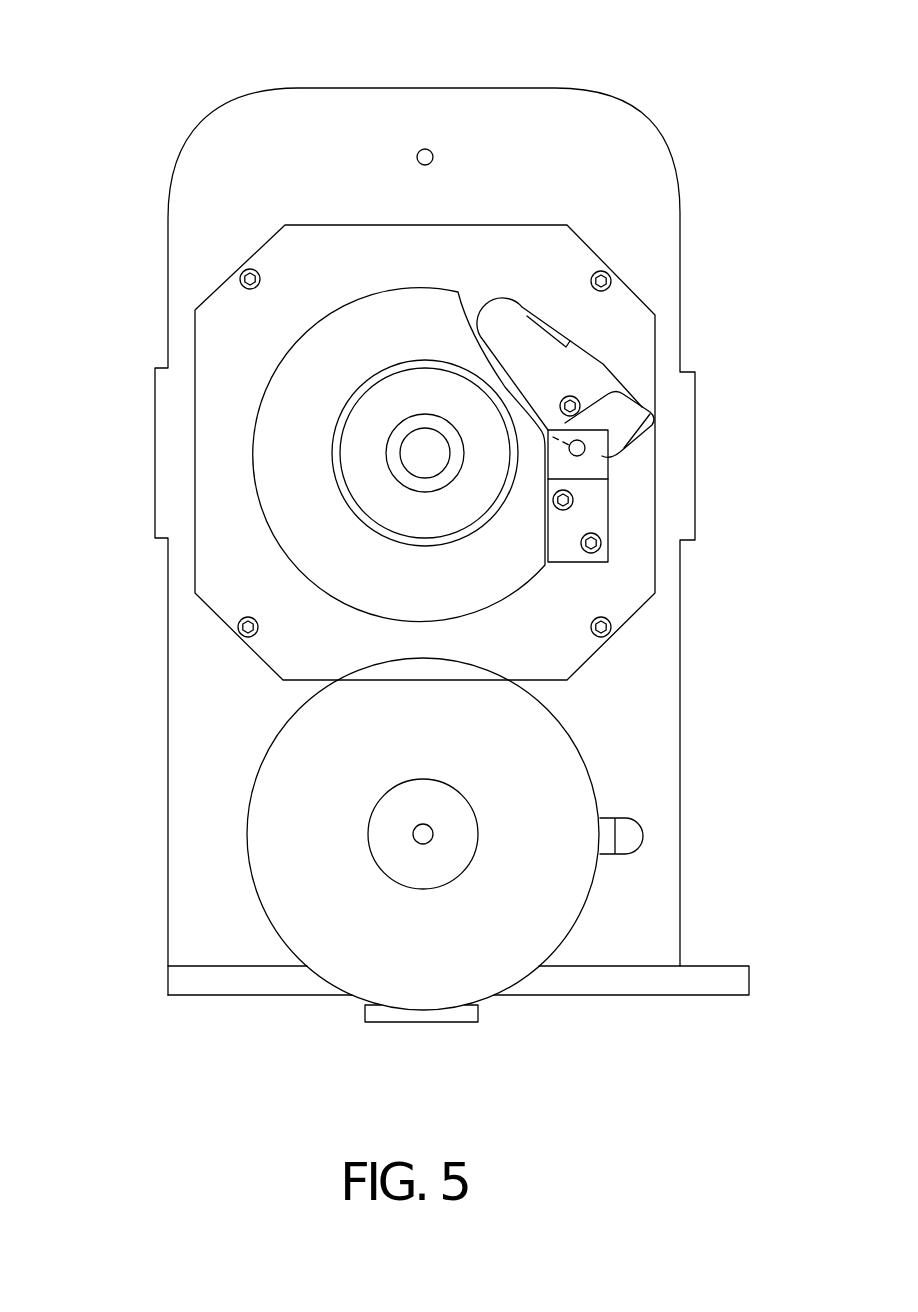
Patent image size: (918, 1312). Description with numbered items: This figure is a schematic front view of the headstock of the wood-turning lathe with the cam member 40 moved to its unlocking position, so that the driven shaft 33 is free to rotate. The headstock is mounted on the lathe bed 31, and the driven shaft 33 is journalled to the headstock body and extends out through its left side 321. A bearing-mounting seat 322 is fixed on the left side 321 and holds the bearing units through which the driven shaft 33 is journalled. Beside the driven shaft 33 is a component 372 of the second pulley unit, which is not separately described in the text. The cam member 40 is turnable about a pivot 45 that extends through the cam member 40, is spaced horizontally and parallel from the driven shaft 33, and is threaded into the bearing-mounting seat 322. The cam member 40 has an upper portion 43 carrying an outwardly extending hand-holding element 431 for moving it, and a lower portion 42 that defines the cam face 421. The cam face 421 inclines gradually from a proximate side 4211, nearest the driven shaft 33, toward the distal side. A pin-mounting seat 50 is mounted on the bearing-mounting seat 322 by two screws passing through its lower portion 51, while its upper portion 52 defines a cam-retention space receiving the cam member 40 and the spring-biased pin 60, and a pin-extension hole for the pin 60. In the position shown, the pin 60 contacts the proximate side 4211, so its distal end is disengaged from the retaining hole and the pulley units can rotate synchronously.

The lathe bed 31 is at (698, 988).
The left side 321 is at (212, 142).
The bearing-mounting seat 322 is at (222, 302).
The driven shaft 33 is at (417, 460).
The cam disc 372 is at (277, 408).
The cam member 40 is at (641, 238).
The lower portion 42 is at (640, 402).
The cam face 421 is at (628, 436).
The proximate side 4211 is at (586, 448).
The upper portion 43 is at (506, 312).
The hand-holding element 431 is at (552, 335).
The pivot 45 is at (578, 401).
The pin-mounting seat 50 is at (676, 553).
The lower portion 51 is at (562, 558).
The upper portion 52 is at (603, 473).
The spring-biased pin 60 is at (586, 472).